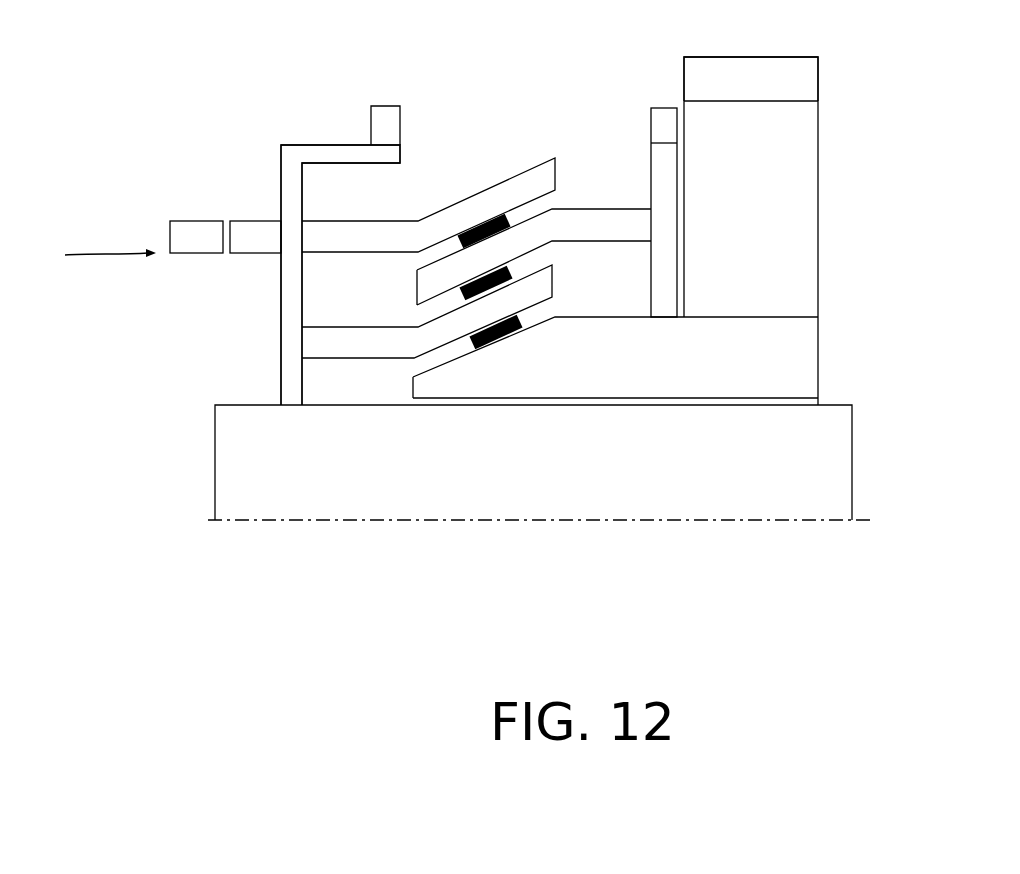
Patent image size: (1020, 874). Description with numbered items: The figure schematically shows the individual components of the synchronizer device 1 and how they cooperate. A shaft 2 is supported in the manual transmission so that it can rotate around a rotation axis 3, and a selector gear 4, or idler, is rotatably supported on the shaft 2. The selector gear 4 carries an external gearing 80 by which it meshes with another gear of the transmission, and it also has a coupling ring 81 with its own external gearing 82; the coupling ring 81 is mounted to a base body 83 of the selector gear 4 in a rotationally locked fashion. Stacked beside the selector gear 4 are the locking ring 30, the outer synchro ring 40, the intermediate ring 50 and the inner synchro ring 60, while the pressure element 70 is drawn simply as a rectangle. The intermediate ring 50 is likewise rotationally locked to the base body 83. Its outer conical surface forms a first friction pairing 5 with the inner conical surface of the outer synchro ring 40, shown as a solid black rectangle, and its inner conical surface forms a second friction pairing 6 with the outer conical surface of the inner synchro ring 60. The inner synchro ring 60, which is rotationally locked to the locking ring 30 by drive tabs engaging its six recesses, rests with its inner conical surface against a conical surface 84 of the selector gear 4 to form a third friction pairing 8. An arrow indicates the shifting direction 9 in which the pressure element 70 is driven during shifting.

The synchronizer device 1 is at (264, 96).
The shaft 2 is at (213, 483).
The rotation axis 3 is at (790, 522).
The selector gear 4 is at (818, 245).
The first friction pairing 5 is at (484, 226).
The second friction pairing 6 is at (483, 295).
The third friction pairing 8 is at (492, 345).
The shifting direction 9 is at (110, 270).
The locking ring 30 is at (283, 160).
The outer synchro ring 40 is at (527, 167).
The intermediate ring 50 is at (418, 290).
The inner synchro ring 60 is at (323, 363).
The pressure element 70 is at (170, 238).
The external gearing 80 is at (780, 66).
The coupling ring 81 is at (668, 165).
The external gearing 82 is at (670, 117).
The base body 83 is at (762, 337).
The conical surface 84 is at (464, 357).